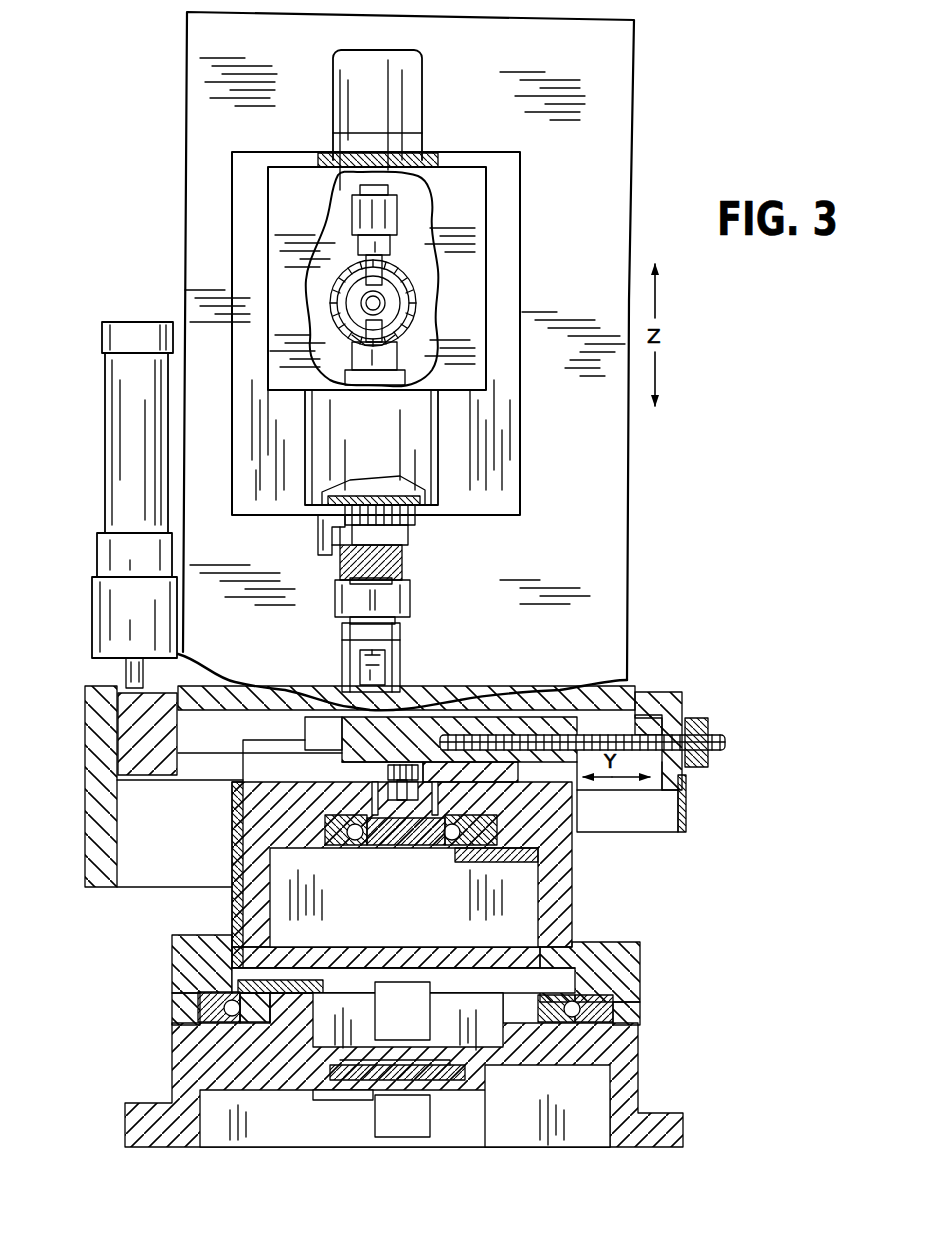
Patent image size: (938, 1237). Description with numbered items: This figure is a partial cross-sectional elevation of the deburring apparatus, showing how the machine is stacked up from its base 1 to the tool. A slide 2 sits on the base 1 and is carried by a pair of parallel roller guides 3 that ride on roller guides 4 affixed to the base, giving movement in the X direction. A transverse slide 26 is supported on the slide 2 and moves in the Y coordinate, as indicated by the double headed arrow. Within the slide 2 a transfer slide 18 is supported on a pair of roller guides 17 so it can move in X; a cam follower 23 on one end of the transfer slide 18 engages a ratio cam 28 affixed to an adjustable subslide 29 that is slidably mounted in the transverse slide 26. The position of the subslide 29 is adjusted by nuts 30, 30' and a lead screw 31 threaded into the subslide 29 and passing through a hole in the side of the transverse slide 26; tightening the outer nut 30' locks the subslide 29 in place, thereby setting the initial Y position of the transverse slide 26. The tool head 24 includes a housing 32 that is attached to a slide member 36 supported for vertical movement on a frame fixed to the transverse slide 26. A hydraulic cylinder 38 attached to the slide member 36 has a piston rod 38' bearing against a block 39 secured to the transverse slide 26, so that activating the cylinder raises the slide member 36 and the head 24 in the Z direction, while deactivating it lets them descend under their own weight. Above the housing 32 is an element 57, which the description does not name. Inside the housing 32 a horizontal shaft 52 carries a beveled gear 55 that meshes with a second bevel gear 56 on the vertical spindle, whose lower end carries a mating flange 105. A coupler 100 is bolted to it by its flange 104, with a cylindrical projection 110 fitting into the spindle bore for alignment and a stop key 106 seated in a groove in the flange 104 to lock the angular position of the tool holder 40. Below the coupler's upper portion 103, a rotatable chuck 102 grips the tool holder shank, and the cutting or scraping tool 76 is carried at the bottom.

The base 1 is at (630, 1090).
The slide 2 is at (632, 962).
The roller guides 3 is at (200, 1002).
The roller guides 4 is at (272, 1018).
The roller guides 17 is at (340, 840).
The transfer slide 18 is at (400, 835).
The cam follower 23 is at (388, 772).
The tool head 24 is at (492, 340).
The transverse slide 26 is at (100, 852).
The ratio cam 28 is at (518, 780).
The subslide 29 is at (367, 737).
The nut 30 is at (685, 751).
The outer nut 30' is at (611, 737).
The lead screw 31 is at (600, 740).
The housing 32 is at (312, 211).
The slide member 36 is at (612, 145).
The hydraulic cylinder 38 is at (114, 449).
The piston rod 38' is at (109, 632).
The block 39 is at (140, 745).
The tool holder 40 is at (406, 658).
The horizontal shaft 52 is at (362, 302).
The beveled gear 55 is at (418, 290).
The second bevel gear 56 is at (402, 338).
The motor 57 is at (412, 95).
The cutting or scraping tool 76 is at (392, 670).
The coupler 100 is at (418, 579).
The chuck 102 is at (412, 600).
The upper portion of coupler 103 is at (385, 498).
The flange 104 is at (410, 550).
The mating flange 105 is at (412, 536).
The stop key 106 is at (320, 540).
The cylindrical projection 110 is at (345, 565).